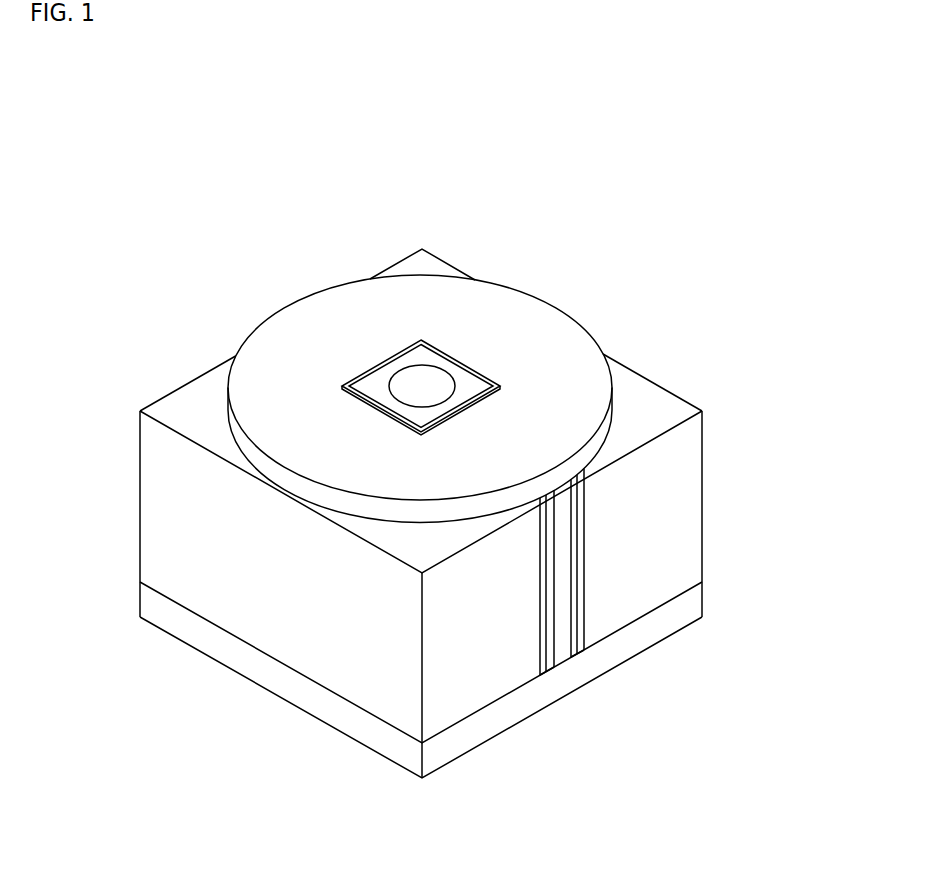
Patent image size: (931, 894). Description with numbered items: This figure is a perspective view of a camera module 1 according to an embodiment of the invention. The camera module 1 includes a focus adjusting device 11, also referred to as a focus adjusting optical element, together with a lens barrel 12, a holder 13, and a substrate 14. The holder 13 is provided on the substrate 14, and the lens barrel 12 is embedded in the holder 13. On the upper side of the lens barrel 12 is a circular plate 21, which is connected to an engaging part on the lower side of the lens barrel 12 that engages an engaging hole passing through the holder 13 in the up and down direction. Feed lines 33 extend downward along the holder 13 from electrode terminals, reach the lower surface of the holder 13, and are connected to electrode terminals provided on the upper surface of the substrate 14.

The camera module 1 is at (243, 111).
The focus adjusting device 11 is at (431, 362).
The lens barrel 12 is at (289, 297).
The holder 13 is at (697, 500).
The substrate 14 is at (697, 603).
The circular plate 21 is at (545, 318).
The feed line 33 is at (547, 663).